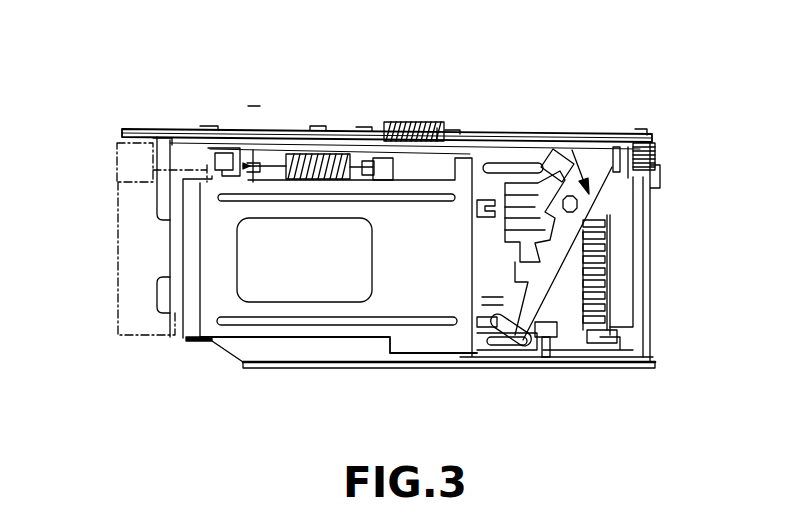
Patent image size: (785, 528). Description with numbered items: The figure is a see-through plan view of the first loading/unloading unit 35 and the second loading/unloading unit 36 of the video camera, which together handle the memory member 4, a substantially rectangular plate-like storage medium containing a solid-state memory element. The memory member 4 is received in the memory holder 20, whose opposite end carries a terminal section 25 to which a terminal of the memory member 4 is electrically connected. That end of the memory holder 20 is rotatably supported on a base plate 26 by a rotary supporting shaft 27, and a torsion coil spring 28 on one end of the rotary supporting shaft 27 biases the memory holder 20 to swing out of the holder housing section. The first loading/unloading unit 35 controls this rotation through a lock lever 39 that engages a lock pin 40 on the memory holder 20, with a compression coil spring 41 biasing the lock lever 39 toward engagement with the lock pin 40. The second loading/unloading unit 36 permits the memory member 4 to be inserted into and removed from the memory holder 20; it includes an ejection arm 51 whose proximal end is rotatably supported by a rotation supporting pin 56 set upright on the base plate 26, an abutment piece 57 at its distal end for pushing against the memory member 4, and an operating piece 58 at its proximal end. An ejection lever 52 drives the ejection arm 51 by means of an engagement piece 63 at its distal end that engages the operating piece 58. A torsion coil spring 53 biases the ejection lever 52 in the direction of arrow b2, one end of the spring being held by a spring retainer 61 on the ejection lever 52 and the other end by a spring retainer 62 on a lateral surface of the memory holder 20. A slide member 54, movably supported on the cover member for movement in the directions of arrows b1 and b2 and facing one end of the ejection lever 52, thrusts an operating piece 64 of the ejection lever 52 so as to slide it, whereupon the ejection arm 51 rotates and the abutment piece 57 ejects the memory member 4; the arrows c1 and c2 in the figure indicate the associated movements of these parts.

The memory member 4 is at (133, 308).
The memory holder 20 is at (222, 302).
The terminal section 25 is at (600, 299).
The base plate 26 is at (173, 182).
The rotary supporting shaft 27 is at (643, 275).
The torsion coil spring 28 is at (655, 168).
The first loading/unloading unit 35 is at (254, 105).
The second loading/unloading unit 36 is at (567, 138).
The lock lever 39 is at (273, 131).
The lock pin 40 is at (325, 127).
The compression coil spring 41 is at (437, 140).
The ejection arm 51 is at (607, 246).
The ejection lever 52 is at (405, 125).
The torsion coil spring 53 is at (339, 155).
The slide member 54 is at (125, 152).
The rotation supporting pin 56 is at (580, 205).
The abutment piece 57 is at (488, 264).
The operating piece 58 is at (655, 142).
The spring retainer 61 is at (368, 178).
The spring retainer 62 is at (263, 160).
The engagement piece 63 is at (602, 138).
The operating piece 64 is at (217, 154).
The direction of movement of the slide member b1 is at (213, 103).
The biasing direction of the ejection lever b2 is at (128, 103).
The rotation direction c1 is at (478, 314).
The movement direction c2 is at (574, 334).